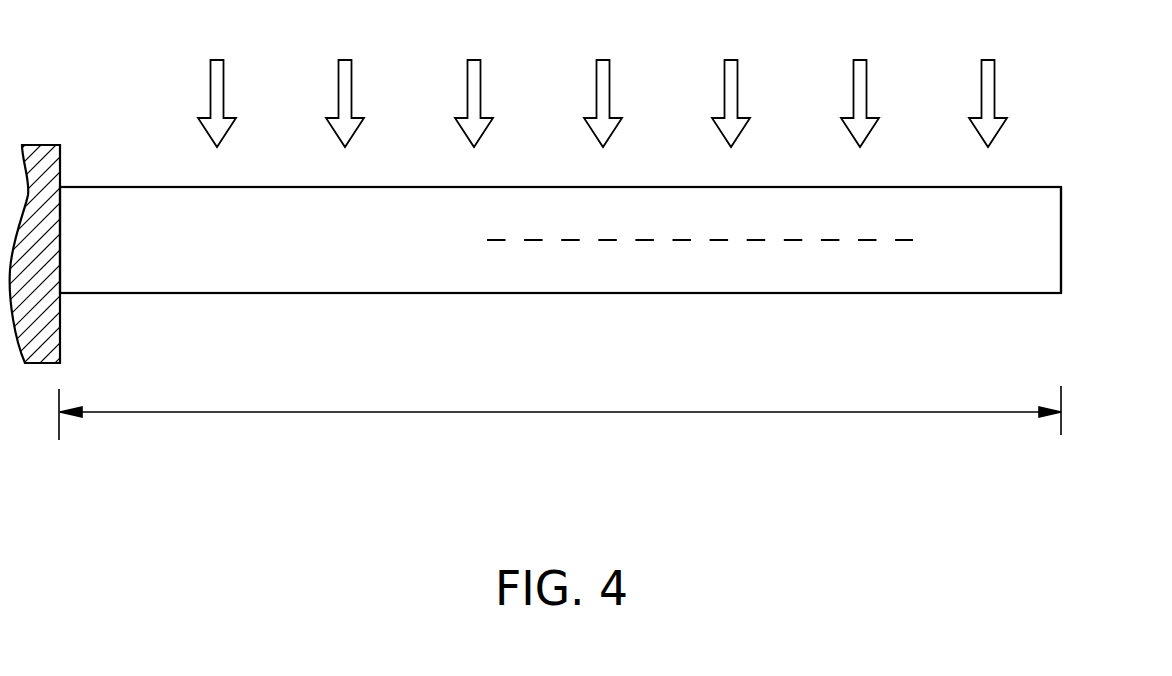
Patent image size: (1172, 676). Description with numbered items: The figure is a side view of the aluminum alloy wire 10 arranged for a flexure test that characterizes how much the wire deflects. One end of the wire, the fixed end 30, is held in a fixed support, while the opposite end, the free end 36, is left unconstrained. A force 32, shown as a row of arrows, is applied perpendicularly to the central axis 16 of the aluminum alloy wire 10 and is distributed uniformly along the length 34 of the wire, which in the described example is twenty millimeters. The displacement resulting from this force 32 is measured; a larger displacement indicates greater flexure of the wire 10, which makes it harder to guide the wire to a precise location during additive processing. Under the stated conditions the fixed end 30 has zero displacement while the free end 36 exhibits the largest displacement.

The aluminum alloy wire 10 is at (351, 270).
The central axis 16 is at (680, 240).
The fixed end 30 is at (60, 280).
The force 32 is at (224, 88).
The length 34 is at (452, 412).
The free end 36 is at (1061, 235).